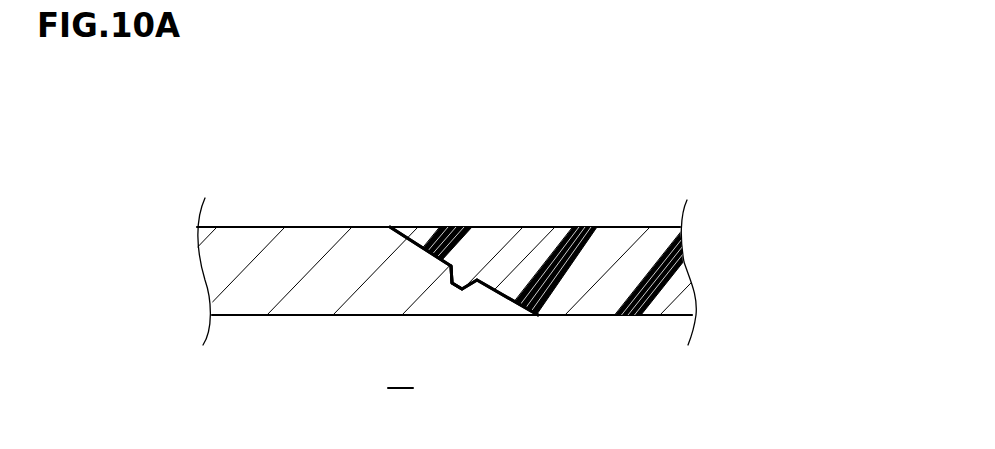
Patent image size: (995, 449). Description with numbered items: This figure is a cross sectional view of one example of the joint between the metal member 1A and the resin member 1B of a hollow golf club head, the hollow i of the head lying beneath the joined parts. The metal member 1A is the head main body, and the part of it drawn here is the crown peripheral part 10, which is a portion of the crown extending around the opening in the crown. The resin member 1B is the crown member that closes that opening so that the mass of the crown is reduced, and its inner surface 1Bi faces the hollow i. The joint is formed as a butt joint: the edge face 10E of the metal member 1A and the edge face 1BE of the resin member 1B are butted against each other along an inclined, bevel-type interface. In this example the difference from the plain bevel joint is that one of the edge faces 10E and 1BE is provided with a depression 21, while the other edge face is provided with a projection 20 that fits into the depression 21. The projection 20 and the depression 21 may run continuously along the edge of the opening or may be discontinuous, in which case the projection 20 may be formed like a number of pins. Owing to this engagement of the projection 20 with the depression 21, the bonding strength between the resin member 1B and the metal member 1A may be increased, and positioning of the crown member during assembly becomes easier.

The metal member 1A is at (335, 220).
The crown peripheral part 10 is at (255, 198).
The edge face of metal member 10E is at (421, 251).
The depression 21 is at (460, 278).
The resin member 1B is at (632, 207).
The projection 20 is at (450, 273).
The hollow i is at (400, 372).
The edge face of resin member 1BE is at (533, 317).
The inner surface of crown member 1Bi is at (648, 317).